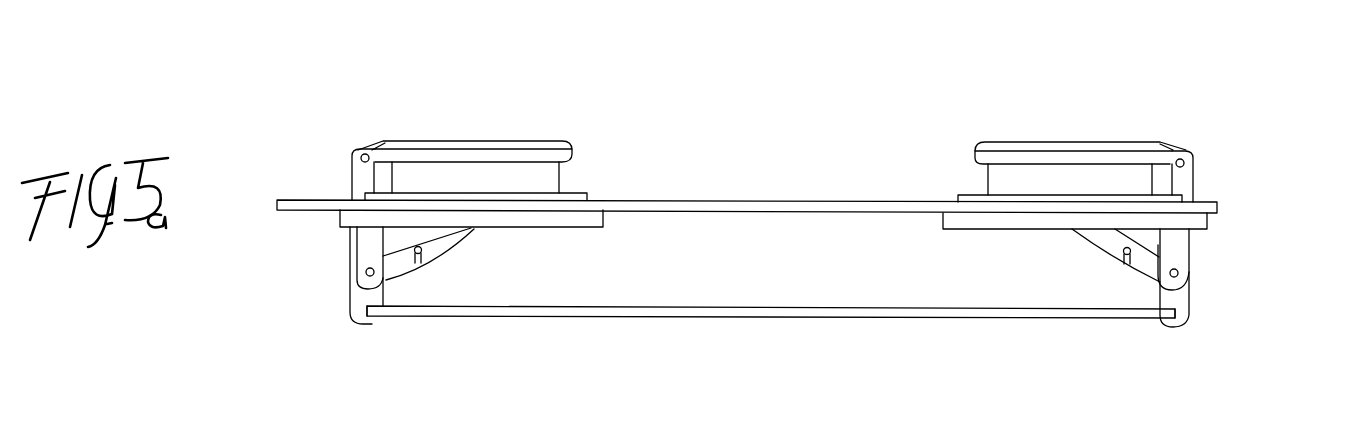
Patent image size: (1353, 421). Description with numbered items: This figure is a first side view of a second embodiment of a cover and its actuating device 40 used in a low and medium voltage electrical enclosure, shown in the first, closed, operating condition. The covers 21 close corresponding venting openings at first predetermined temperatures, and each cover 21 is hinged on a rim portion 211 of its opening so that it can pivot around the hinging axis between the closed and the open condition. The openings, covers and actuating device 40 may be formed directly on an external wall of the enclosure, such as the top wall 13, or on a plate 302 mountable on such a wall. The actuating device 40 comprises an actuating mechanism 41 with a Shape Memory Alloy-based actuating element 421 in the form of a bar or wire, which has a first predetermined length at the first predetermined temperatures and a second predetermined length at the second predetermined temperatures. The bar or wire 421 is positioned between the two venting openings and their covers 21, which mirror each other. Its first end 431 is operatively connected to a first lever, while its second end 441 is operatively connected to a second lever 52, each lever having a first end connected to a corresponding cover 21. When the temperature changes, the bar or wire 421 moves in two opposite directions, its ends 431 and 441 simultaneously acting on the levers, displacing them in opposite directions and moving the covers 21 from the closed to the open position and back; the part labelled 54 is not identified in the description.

The actuating device 40 is at (270, 120).
The top wall 13 is at (762, 200).
The plate 302 is at (873, 202).
The cover 21 is at (455, 145).
The rim portion 211 is at (363, 143).
The second lever 52 is at (363, 292).
The right lower hinge 54 is at (1147, 263).
The actuating mechanism 41 is at (783, 304).
The SMA-based actuating element 421 is at (772, 310).
The second end of the bar or wire 441 is at (369, 308).
The first end of the bar or wire 431 is at (1173, 311).